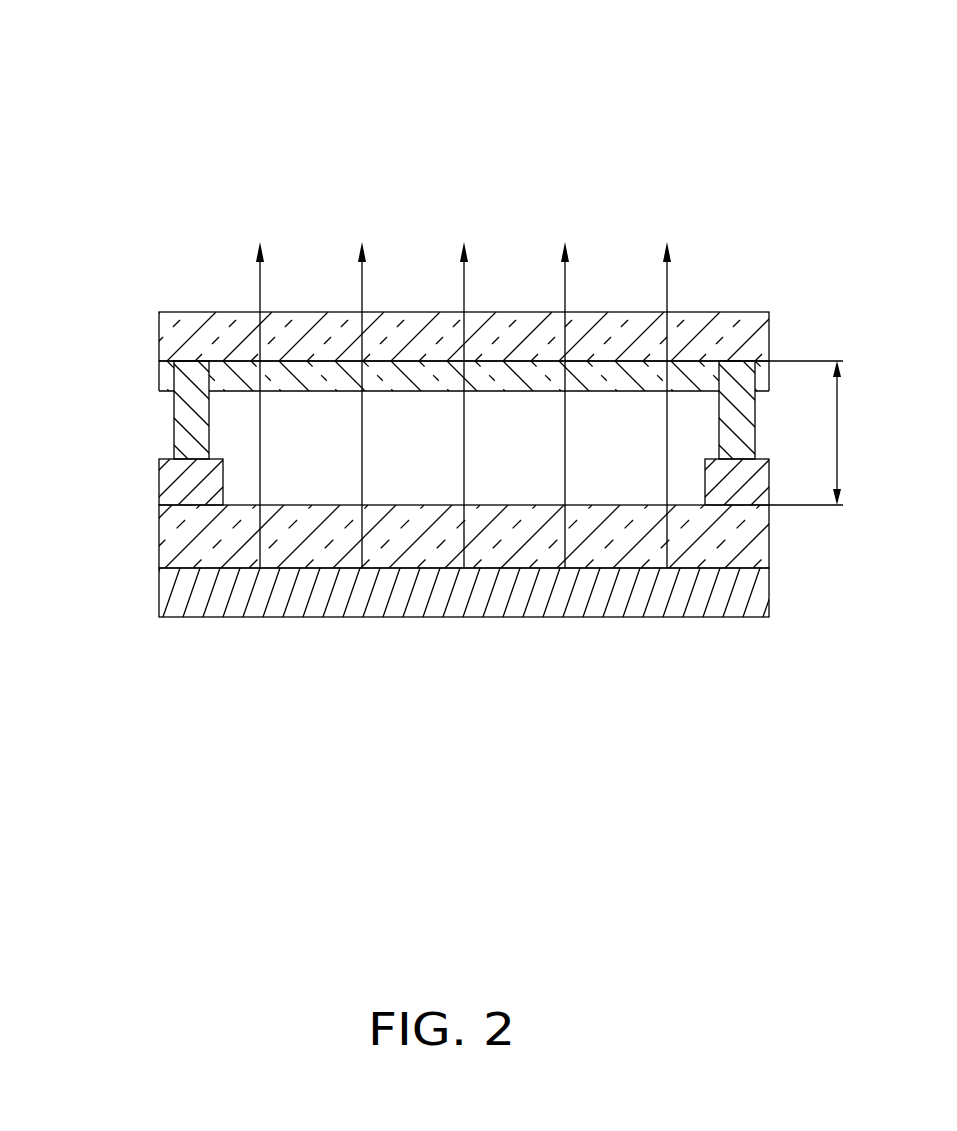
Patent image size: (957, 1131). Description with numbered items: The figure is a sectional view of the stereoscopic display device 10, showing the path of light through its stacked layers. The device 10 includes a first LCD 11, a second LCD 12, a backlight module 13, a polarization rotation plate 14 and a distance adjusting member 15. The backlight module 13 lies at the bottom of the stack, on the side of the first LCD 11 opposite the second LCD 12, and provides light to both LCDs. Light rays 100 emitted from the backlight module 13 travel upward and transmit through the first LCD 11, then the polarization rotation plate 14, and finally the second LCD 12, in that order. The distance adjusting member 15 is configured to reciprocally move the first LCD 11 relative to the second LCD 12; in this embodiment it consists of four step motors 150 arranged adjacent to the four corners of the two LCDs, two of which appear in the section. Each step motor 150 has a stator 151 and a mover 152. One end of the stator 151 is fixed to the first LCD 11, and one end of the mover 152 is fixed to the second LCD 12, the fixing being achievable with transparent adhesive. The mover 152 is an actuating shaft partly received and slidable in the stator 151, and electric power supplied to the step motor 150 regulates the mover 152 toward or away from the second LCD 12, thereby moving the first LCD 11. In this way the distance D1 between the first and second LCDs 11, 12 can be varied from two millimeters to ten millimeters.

The stereoscopic display device 10 is at (235, 66).
The light rays 100 is at (464, 290).
The first LCD 11 is at (757, 545).
The second LCD 12 is at (737, 332).
The backlight module 13 is at (700, 600).
The polarization rotation plate 14 is at (165, 375).
The distance adjusting member 15 is at (142, 406).
The step motor 150 is at (89, 418).
The stator 151 is at (187, 491).
The mover 152 is at (185, 440).
The distance between first and second LCDs D1 is at (821, 433).